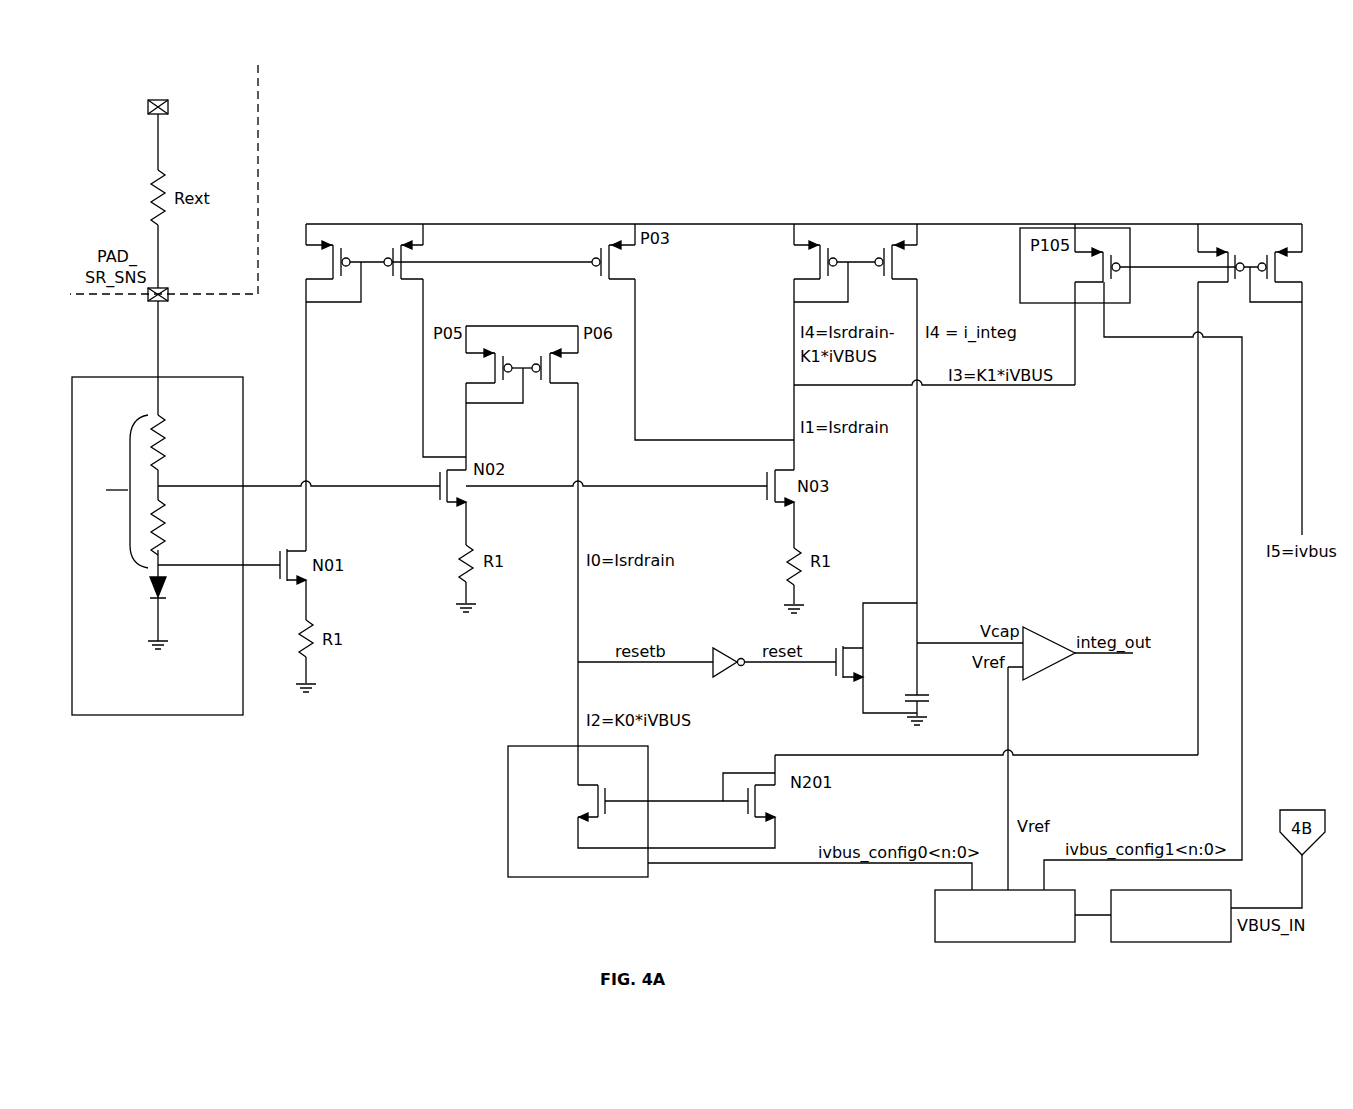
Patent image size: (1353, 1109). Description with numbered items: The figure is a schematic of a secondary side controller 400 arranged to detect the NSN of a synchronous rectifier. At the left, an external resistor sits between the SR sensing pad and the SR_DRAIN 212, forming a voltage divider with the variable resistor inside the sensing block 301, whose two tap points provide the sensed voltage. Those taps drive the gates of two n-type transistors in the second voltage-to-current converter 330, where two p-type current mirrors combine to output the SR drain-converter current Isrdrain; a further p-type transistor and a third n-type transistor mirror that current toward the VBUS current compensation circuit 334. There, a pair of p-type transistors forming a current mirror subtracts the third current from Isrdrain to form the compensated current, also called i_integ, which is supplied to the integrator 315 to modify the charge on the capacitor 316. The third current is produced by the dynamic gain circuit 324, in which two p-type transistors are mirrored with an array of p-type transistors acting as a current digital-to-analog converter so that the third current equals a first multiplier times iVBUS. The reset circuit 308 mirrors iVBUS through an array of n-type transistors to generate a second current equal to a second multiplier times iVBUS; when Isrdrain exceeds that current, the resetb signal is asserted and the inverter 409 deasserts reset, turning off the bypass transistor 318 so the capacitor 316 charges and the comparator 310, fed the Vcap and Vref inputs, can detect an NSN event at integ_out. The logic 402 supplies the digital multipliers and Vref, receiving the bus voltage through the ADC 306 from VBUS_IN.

The SR_DRAIN 212 is at (154, 95).
The sensing block 301 is at (113, 709).
The second voltage-to-current converter 330 is at (436, 203).
The secondary side controller 400 is at (761, 149).
The VBUS current compensation circuit 334 is at (957, 207).
The dynamic gain circuit 324 is at (1204, 195).
The integrator 315 is at (945, 593).
The comparator 310 is at (1055, 617).
The capacitor 316 is at (927, 702).
The bypass transistor 318 is at (836, 690).
The inverter 409 is at (723, 648).
The reset circuit 308 is at (714, 879).
The logic 402 is at (1050, 925).
The ADC 306 is at (1208, 925).